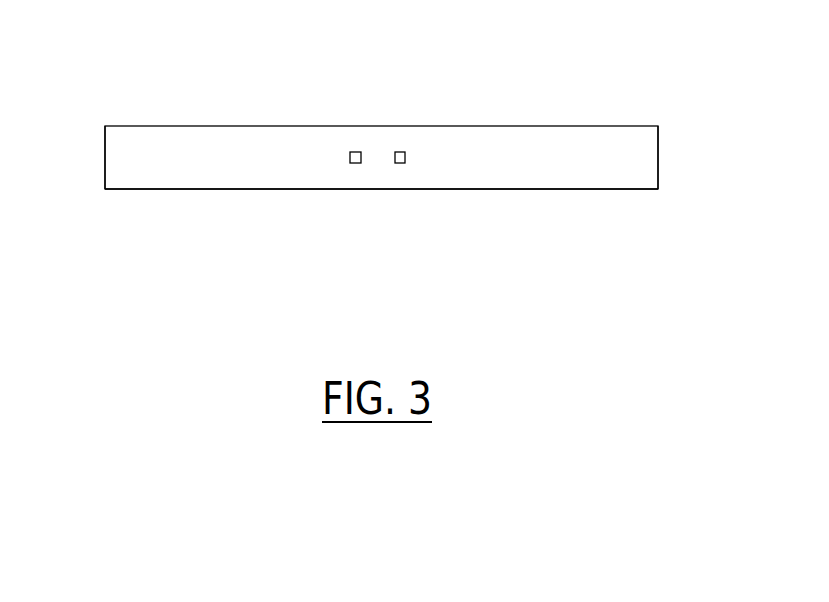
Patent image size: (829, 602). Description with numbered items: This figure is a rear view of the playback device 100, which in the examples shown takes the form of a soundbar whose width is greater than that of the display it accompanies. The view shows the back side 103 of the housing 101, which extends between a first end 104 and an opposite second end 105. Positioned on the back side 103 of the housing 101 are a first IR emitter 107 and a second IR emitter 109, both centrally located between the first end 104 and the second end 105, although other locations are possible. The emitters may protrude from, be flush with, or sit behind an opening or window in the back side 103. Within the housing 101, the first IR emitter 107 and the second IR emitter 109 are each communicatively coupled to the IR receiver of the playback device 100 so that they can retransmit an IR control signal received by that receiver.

The playback device 100 is at (612, 90).
The housing 101 is at (469, 126).
The back side 103 is at (218, 173).
The first end 104 is at (658, 145).
The second end 105 is at (105, 162).
The first IR emitter 107 is at (405, 157).
The second IR emitter 109 is at (350, 158).